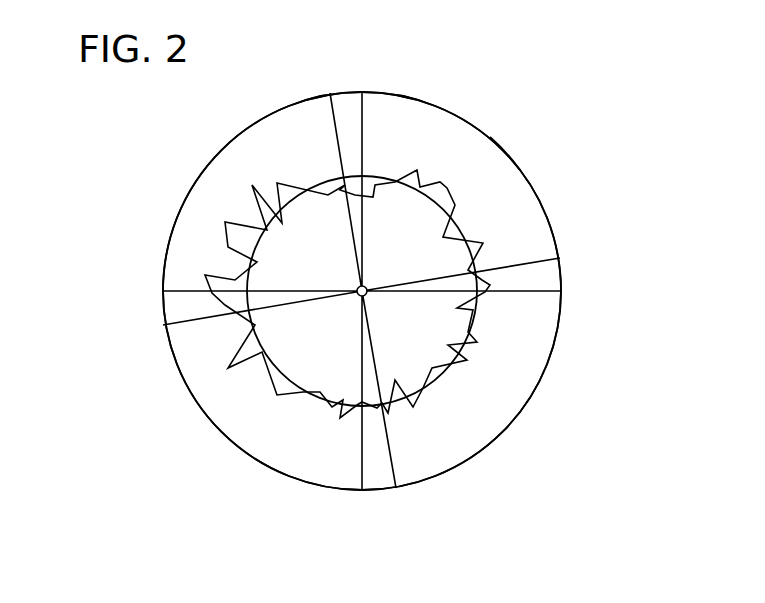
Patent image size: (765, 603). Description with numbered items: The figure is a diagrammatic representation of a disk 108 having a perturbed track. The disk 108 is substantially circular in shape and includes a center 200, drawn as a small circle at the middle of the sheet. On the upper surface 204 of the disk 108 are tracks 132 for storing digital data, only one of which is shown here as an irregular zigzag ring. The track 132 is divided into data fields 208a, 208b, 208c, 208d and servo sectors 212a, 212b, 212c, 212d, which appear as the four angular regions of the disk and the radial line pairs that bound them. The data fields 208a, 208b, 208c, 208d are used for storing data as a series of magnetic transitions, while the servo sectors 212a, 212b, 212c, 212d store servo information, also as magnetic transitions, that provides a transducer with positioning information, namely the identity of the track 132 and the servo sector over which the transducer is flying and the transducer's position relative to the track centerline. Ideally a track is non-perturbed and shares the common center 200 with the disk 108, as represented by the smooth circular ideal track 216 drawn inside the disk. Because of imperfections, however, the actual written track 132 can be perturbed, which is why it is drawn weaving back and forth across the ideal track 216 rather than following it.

The disk 108 is at (503, 157).
The track 132 is at (227, 238).
The center 200 is at (367, 286).
The upper surface 204 is at (458, 118).
The data field 208a is at (527, 187).
The data field 208b is at (515, 403).
The data field 208c is at (200, 397).
The data field 208d is at (215, 172).
The servo sector 212a is at (347, 100).
The servo sector 212b is at (557, 277).
The servo sector 212c is at (385, 483).
The servo sector 212d is at (167, 307).
The ideal track 216 is at (320, 180).